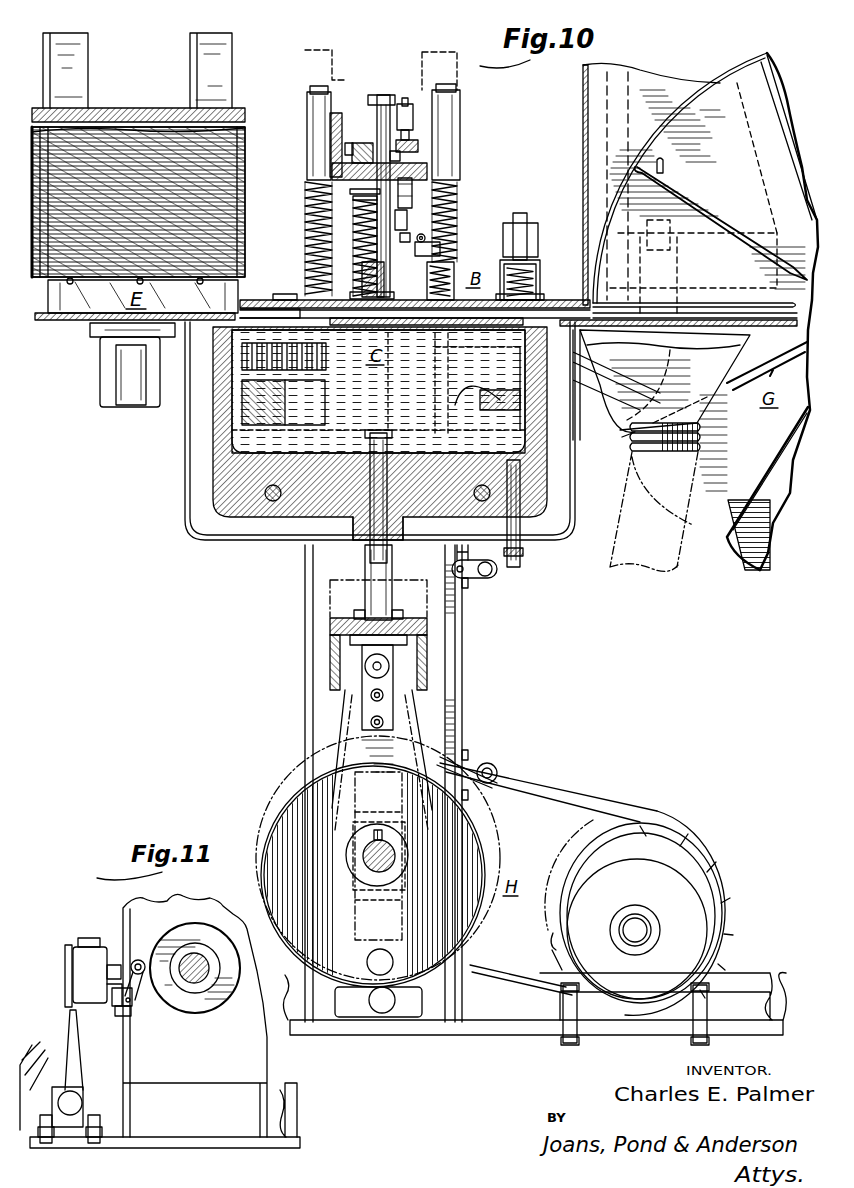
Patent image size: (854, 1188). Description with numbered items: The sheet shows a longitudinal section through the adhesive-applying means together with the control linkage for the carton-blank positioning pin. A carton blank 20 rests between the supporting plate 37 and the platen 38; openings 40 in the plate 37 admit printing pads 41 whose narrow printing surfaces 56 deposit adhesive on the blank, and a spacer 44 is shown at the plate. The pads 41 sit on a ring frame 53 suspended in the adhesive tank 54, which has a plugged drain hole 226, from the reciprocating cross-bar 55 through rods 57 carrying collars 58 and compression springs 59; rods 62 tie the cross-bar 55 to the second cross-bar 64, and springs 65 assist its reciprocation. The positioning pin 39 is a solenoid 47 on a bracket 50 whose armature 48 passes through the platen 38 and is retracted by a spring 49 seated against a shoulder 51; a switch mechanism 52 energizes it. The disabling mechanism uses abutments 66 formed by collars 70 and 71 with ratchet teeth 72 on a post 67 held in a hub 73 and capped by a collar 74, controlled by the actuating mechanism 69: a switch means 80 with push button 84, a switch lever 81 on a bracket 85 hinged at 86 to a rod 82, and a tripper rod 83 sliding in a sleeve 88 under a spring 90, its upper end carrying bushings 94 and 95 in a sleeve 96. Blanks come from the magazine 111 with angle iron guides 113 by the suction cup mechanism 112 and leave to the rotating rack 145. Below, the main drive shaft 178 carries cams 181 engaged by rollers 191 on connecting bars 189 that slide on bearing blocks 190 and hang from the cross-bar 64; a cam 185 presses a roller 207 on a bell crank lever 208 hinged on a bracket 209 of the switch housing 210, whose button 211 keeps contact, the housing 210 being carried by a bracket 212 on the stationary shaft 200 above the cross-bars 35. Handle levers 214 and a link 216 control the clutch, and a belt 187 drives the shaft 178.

In FIG. 10, the carton blank 20 is at (238, 111).
In FIG. 11, the lateral horizontal cross-bar 35 is at (180, 1137).
In FIG. 10, the supporting plate 37 is at (389, 357).
In FIG. 10, the platen 38 is at (587, 300).
In FIG. 10, the positioning pin 39 is at (542, 300).
In FIG. 10, the opening 40 is at (262, 300).
In FIG. 10, the printing pad 41 is at (230, 378).
In FIG. 10, the spacer block 44 is at (283, 294).
In FIG. 10, the solenoid 47 is at (528, 226).
In FIG. 10, the armature 48 is at (538, 245).
In FIG. 10, the spring 49 is at (545, 296).
In FIG. 10, the bracket 50 is at (503, 266).
In FIG. 10, the shoulder 51 is at (536, 268).
In FIG. 11, the switch mechanism 52 is at (78, 992).
In FIG. 10, the frame 53 is at (272, 432).
In FIG. 10, the adhesive tank 54 is at (215, 492).
In FIG. 10, the cross-bar 55 is at (462, 112).
In FIG. 10, the printing surface 56 is at (286, 366).
In FIG. 10, the rod 57 is at (306, 190).
In FIG. 10, the collar 58 is at (350, 295).
In FIG. 10, the compression spring 59 is at (305, 210).
In FIG. 10, the rod 62 is at (357, 194).
In FIG. 10, the second cross-bar 64 is at (428, 628).
In FIG. 10, the spring 65 is at (358, 209).
In FIG. 10, the abutments 66 is at (368, 135).
In FIG. 10, the post 67 is at (342, 118).
In FIG. 10, the actuating mechanism 69 is at (408, 219).
In FIG. 10, the collar 70 is at (340, 166).
In FIG. 10, the collar 71 is at (345, 148).
In FIG. 10, the ratchet teeth 72 is at (352, 153).
In FIG. 10, the hub 73 is at (362, 268).
In FIG. 10, the collar 74 is at (384, 95).
In FIG. 10, the switch means 80 is at (454, 278).
In FIG. 10, the switch lever 81 is at (430, 238).
In FIG. 10, the rod 82 is at (430, 291).
In FIG. 10, the tripper rod 83 is at (412, 146).
In FIG. 10, the push button 84 is at (440, 248).
In FIG. 10, the bracket 85 is at (430, 275).
In FIG. 10, the hinge 86 is at (358, 236).
In FIG. 10, the sleeve 88 is at (455, 185).
In FIG. 10, the spring 90 is at (410, 195).
In FIG. 10, the bushing 94 is at (420, 141).
In FIG. 10, the bushing 95 is at (404, 99).
In FIG. 10, the sleeve 96 is at (413, 108).
In FIG. 10, the carton-blank magazine 111 is at (152, 100).
In FIG. 10, the suction cup mechanism 112 is at (92, 366).
In FIG. 10, the angle iron guide 113 is at (192, 54).
In FIG. 10, the rotating rack 145 is at (762, 205).
In FIG. 10, the main drive shaft 178 is at (395, 870).
In FIG. 11, the main drive shaft 178 is at (199, 980).
In FIG. 10, the cam 181 is at (470, 928).
In FIG. 11, the cam 185 is at (213, 930).
In FIG. 10, the belt 187 is at (655, 816).
In FIG. 10, the connecting bar 189 is at (405, 750).
In FIG. 10, the bearing block 190 is at (400, 793).
In FIG. 10, the roller 191 is at (389, 1008).
In FIG. 11, the stationary shaft 200 is at (75, 1100).
In FIG. 11, the roller 207 is at (140, 960).
In FIG. 11, the bell crank lever 208 is at (147, 1000).
In FIG. 11, the bracket 209 is at (118, 1018).
In FIG. 11, the switch housing 210 is at (97, 946).
In FIG. 11, the switch button 211 is at (107, 971).
In FIG. 11, the bracket 212 is at (72, 1053).
In FIG. 10, the lever 214 is at (500, 570).
In FIG. 10, the link 216 is at (460, 608).
In FIG. 10, the drain hole 226 is at (524, 562).